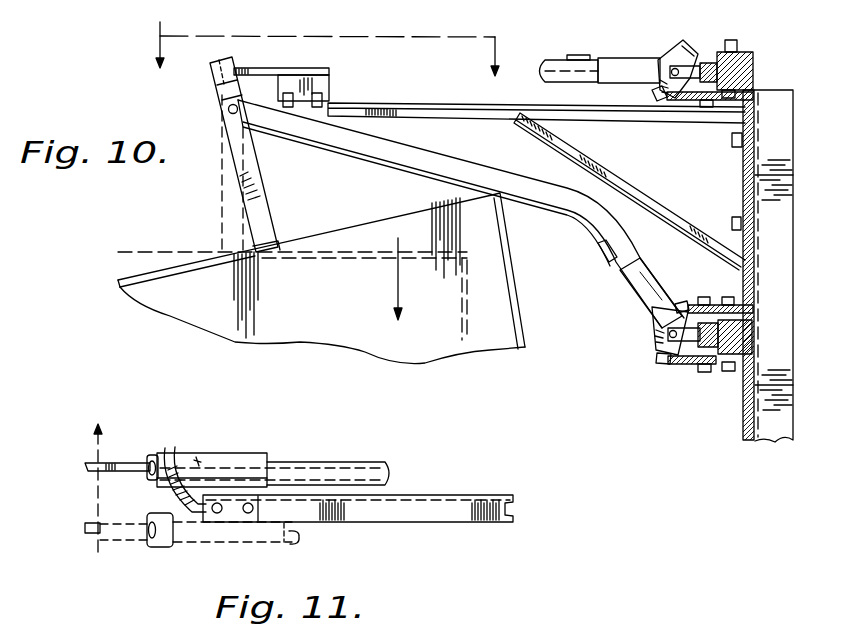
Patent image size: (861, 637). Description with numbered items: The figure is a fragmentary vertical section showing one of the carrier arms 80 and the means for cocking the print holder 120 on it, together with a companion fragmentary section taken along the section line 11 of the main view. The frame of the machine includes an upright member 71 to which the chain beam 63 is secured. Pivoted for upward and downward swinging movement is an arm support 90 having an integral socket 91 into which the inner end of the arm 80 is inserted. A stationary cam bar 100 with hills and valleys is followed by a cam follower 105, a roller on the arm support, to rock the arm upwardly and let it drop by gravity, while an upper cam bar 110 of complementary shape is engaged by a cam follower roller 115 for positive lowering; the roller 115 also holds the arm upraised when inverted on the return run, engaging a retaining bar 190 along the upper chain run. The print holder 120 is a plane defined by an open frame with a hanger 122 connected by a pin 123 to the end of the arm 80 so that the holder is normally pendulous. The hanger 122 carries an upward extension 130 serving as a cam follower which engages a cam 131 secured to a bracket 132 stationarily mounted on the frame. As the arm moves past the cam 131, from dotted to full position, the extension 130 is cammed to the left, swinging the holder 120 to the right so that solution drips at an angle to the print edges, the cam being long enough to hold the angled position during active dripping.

In FIG. 10, the section line 11— 11 is at (330, 39).
In FIG. 10, the chain beam 63 is at (745, 175).
In FIG. 10, the upright member 71 is at (750, 418).
In FIG. 10, the carrier arm 80 is at (430, 172).
In FIG. 11, the carrier arm 80 is at (338, 462).
In FIG. 10, the arm support 90 is at (676, 53).
In FIG. 10, the socket 91 is at (618, 62).
In FIG. 10, the cam bar 100 is at (681, 370).
In FIG. 10, the cam follower 105 is at (658, 361).
In FIG. 10, the upper cam bar 110 is at (722, 305).
In FIG. 10, the cam follower roller 115 is at (657, 100).
In FIG. 10, the print holder 120 is at (130, 267).
In FIG. 11, the print holder 120 is at (86, 475).
In FIG. 10, the hanger 122 is at (267, 198).
In FIG. 11, the hanger 122 is at (207, 455).
In FIG. 10, the pin 123 is at (224, 110).
In FIG. 10, the upward extension 130 is at (212, 79).
In FIG. 11, the upward extension 130 is at (152, 455).
In FIG. 10, the cam 131 is at (257, 69).
In FIG. 11, the cam 131 is at (176, 497).
In FIG. 10, the bracket 132 is at (395, 104).
In FIG. 11, the bracket 132 is at (393, 522).
In FIG. 10, the retaining bar 190 is at (681, 110).